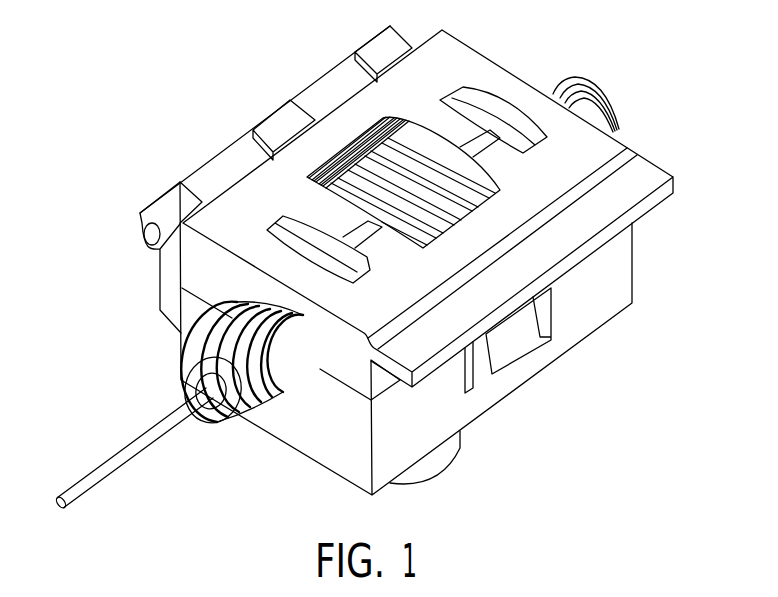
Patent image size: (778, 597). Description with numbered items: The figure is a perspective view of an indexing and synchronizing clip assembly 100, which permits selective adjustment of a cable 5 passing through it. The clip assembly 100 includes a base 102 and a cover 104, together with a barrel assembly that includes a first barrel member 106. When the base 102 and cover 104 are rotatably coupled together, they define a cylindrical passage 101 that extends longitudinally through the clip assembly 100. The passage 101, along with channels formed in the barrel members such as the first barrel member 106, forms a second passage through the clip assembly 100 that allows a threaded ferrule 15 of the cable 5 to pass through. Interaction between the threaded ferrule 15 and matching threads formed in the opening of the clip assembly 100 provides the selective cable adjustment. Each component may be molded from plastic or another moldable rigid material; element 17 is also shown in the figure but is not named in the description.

The cable gland / sensor housing assembly 100 is at (136, 107).
The lid (cover) 104 is at (617, 147).
The roller (thumbwheel) 106 is at (377, 163).
The housing base 102 is at (181, 335).
The coiled strain relief (threaded boss) 101 is at (288, 401).
The cable exit nut / bore 15 is at (212, 402).
The cable 5 is at (95, 487).
The drain (bottom protrusion) 17 is at (460, 448).